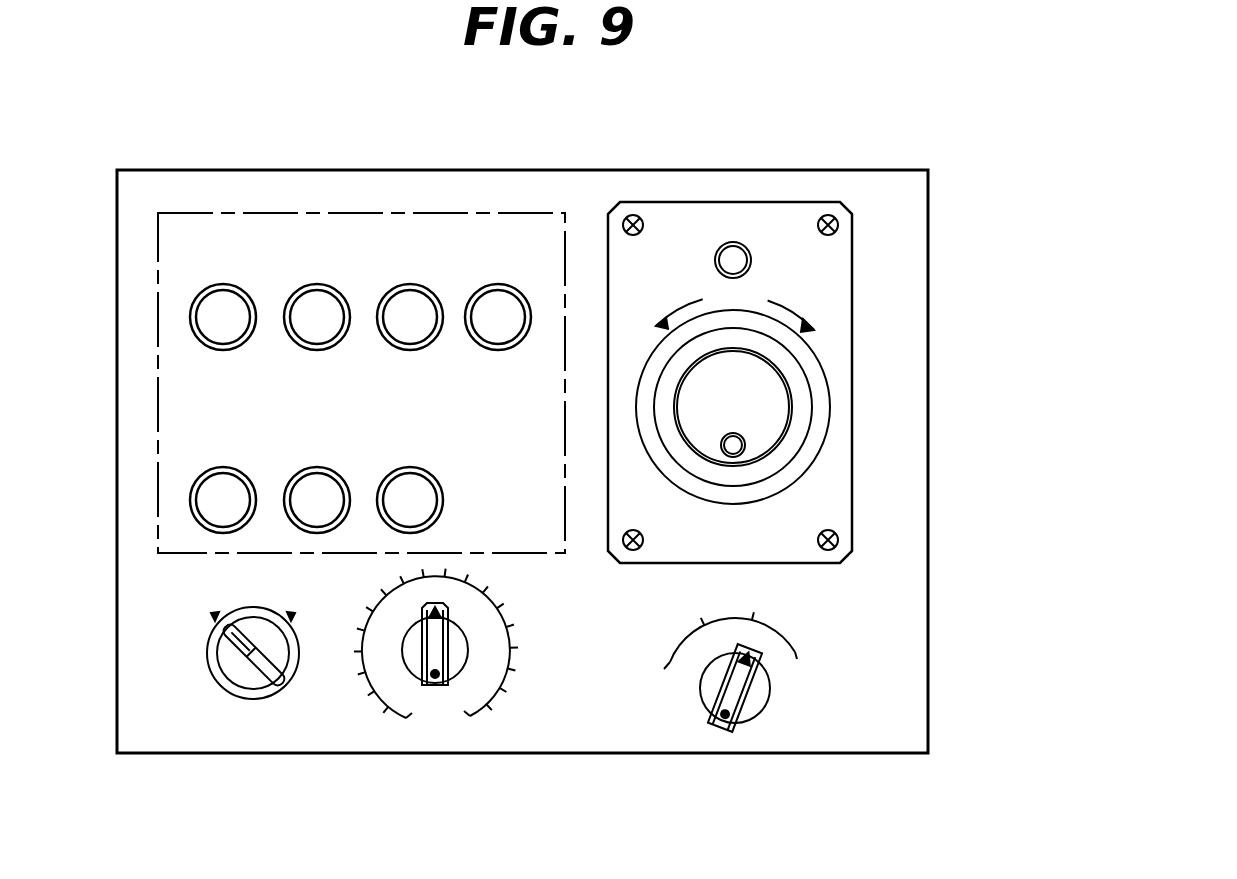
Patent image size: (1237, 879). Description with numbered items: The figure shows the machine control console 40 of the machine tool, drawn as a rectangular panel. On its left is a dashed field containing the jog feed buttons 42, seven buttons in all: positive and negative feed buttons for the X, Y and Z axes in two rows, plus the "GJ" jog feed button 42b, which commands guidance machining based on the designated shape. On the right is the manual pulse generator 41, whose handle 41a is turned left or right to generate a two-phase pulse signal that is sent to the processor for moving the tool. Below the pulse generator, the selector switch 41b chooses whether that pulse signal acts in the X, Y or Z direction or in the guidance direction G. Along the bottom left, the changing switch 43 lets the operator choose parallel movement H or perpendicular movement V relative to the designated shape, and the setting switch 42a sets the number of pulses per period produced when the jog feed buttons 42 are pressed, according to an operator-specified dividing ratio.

The machine control console 40 is at (906, 170).
The manual pulse generator 41 is at (852, 280).
The handle 41a is at (793, 402).
The selector switch 41b is at (770, 680).
The jog feed buttons 42 is at (197, 213).
The setting switch 42a is at (463, 670).
The jog feed button 42b is at (527, 300).
The changing switch 43 is at (262, 692).